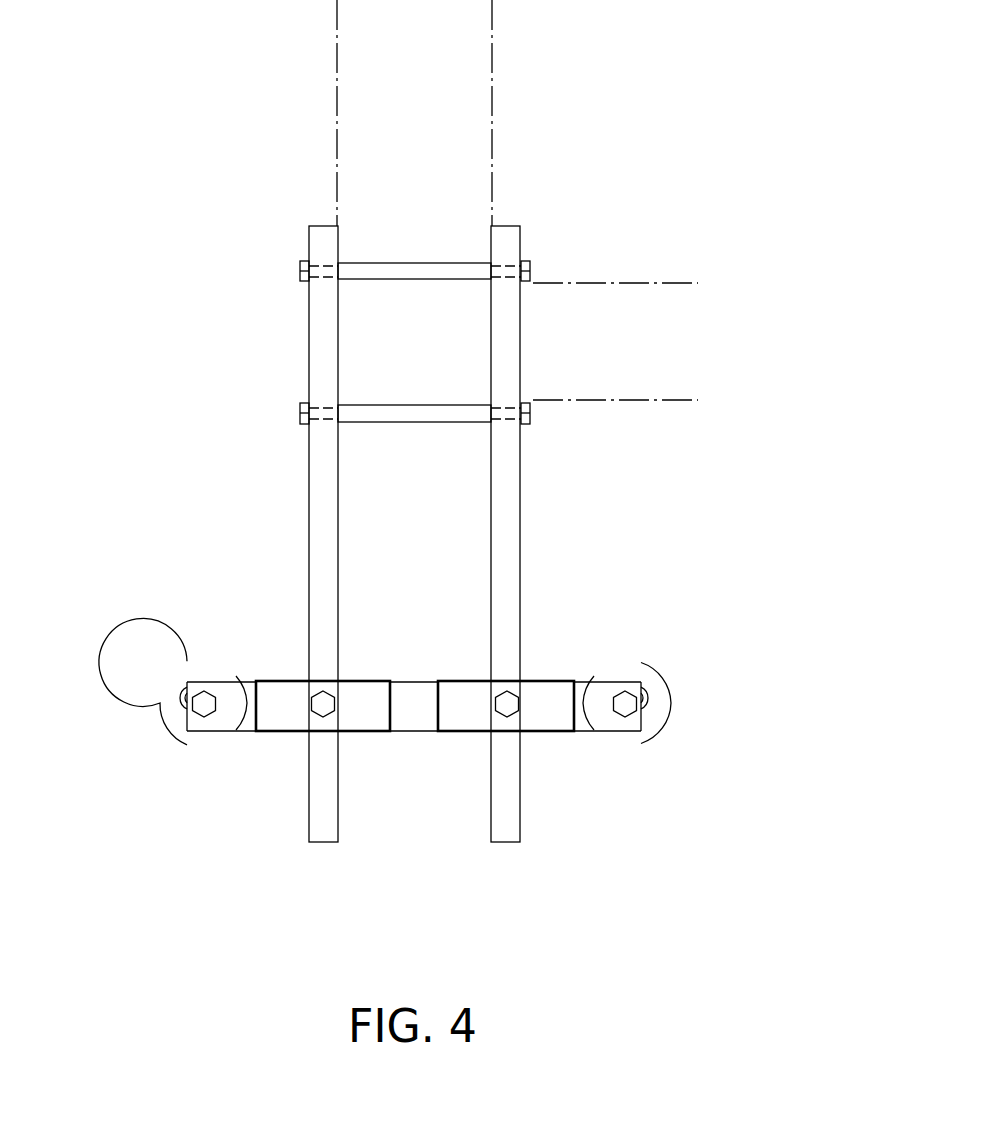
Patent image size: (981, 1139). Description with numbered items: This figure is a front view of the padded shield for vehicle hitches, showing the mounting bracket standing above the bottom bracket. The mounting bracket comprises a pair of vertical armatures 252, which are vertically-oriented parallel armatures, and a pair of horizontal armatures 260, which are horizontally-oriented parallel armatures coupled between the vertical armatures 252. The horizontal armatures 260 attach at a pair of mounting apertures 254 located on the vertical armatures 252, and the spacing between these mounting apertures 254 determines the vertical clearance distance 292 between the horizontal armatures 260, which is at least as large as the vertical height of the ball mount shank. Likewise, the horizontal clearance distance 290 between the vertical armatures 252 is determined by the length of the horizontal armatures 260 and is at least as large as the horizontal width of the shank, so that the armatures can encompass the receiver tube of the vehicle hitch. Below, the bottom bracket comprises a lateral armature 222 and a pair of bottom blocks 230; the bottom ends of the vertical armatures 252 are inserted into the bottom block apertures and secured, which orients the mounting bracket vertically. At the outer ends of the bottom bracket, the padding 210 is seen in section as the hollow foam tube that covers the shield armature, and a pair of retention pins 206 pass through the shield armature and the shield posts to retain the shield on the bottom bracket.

The retention pin 206 is at (170, 697).
The padding 210 is at (193, 660).
The lateral armature 222 is at (414, 732).
The bottom block 230 is at (270, 732).
The vertical armature 252 is at (492, 573).
The mounting aperture 254 is at (328, 405).
The horizontal armature 260 is at (435, 271).
The horizontal clearance distance 290 is at (492, 107).
The vertical clearance distance 292 is at (629, 283).